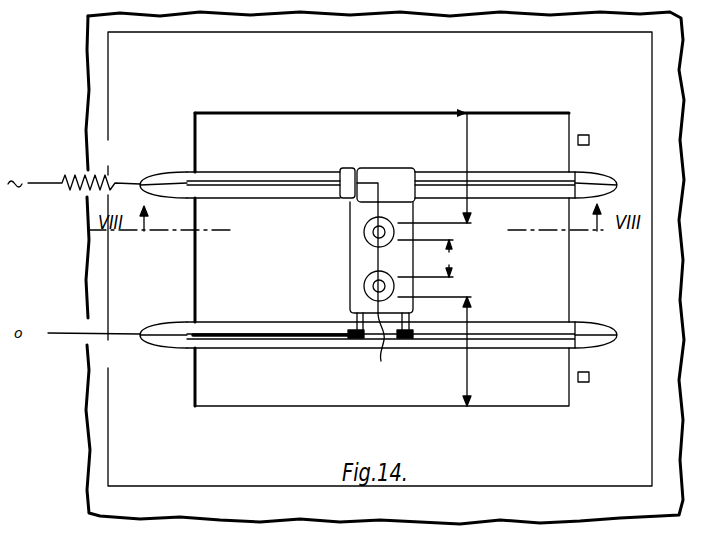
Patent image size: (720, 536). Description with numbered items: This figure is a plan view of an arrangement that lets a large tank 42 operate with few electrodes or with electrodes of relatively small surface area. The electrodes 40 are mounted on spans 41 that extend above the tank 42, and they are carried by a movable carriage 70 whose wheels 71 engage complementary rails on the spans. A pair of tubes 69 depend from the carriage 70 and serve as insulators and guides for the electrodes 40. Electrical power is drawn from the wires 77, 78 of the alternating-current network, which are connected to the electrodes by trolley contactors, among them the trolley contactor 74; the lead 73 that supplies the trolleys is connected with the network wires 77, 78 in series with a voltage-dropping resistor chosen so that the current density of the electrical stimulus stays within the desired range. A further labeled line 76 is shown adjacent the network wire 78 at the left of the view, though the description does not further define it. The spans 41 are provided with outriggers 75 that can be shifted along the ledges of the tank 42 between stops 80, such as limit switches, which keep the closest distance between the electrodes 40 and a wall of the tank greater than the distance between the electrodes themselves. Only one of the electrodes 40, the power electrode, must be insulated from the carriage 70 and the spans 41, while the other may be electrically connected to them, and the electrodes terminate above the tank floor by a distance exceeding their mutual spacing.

The electrodes 40 is at (365, 237).
The spans 41 is at (261, 175).
The tank 42 is at (283, 119).
The tubes 69 is at (367, 227).
The movable carriage 70 is at (402, 210).
The wheels 71 is at (355, 341).
The lead 73 is at (376, 183).
The trolley contactor 74 is at (384, 348).
The outriggers 75 is at (163, 172).
The line 76 is at (107, 158).
The wire 77 is at (105, 336).
The wire 78 is at (54, 182).
The stops 80 is at (591, 138).